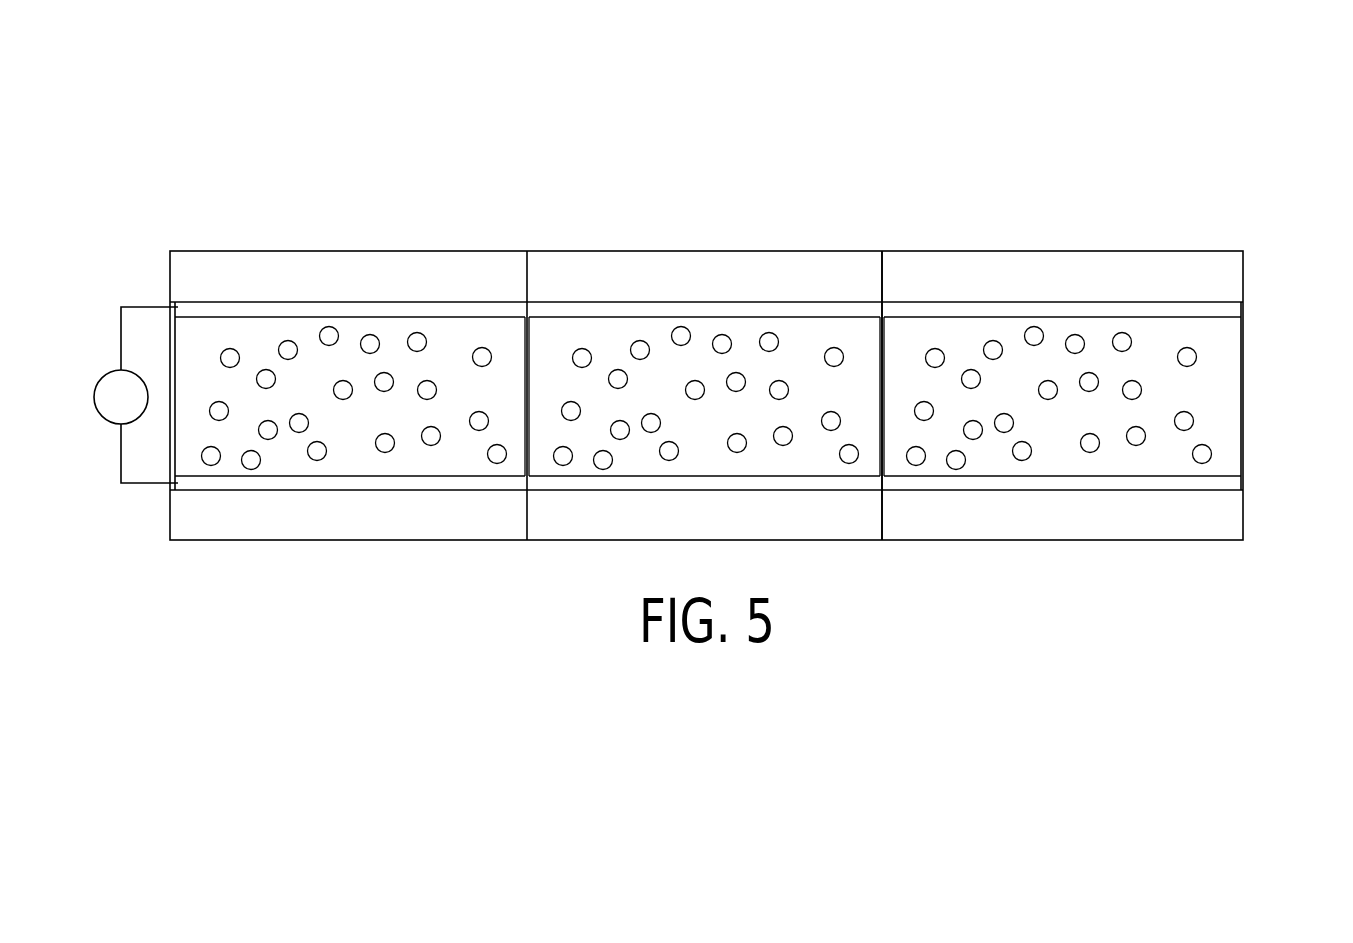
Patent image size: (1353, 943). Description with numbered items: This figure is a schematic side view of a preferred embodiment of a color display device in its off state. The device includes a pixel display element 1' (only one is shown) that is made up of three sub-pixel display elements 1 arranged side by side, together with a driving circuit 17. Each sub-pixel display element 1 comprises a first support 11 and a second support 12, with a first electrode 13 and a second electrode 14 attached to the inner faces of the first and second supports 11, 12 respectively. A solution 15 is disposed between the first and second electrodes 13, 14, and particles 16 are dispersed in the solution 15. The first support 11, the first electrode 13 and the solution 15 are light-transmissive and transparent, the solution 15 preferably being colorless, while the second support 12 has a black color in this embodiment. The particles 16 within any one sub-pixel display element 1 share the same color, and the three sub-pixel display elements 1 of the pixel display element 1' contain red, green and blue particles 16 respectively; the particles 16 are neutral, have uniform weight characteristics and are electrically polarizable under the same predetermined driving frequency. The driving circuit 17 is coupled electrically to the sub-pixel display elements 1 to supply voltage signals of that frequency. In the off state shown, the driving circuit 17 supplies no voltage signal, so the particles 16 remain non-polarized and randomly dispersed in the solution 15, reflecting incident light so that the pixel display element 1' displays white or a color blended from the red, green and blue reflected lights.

The sub-pixel display element 1 is at (707, 303).
The pixel display element 1' is at (1038, 319).
The first support 11 is at (1221, 273).
The second support 12 is at (1223, 521).
The first electrode 13 is at (1225, 307).
The second electrode 14 is at (1229, 481).
The solution 15 is at (352, 322).
The particles 16 is at (230, 352).
The driving circuit 17 is at (107, 373).